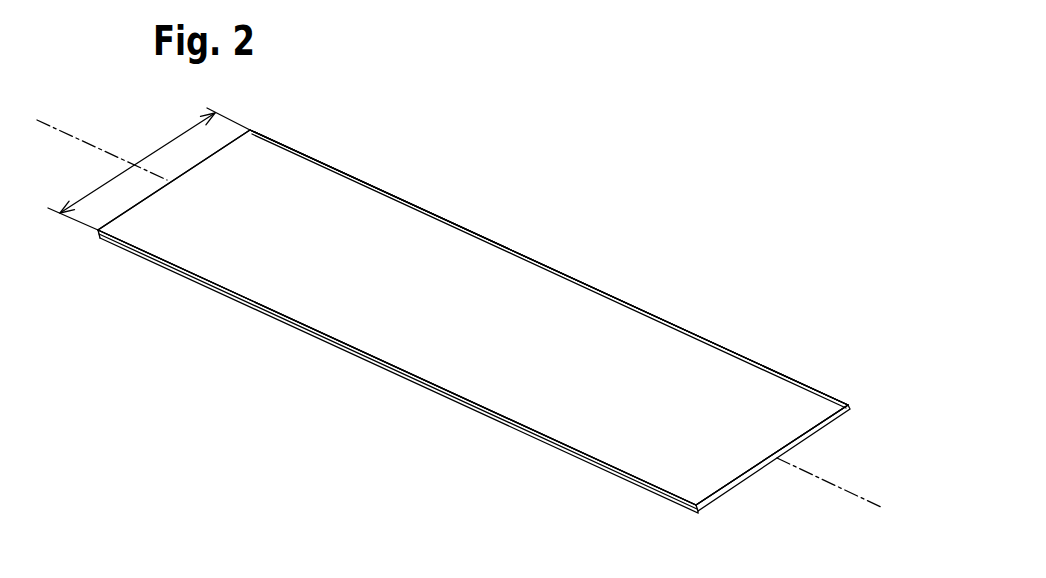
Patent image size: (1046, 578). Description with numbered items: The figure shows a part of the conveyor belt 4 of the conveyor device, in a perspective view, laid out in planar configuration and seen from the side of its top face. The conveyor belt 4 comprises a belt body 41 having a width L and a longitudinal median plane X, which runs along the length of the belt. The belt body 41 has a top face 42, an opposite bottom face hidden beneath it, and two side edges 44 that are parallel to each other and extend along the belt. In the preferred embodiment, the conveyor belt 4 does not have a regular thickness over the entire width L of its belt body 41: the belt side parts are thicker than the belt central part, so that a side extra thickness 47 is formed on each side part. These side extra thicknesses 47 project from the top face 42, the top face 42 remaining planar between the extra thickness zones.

The conveyor belt 4 is at (517, 229).
The belt body 41 is at (572, 310).
The top face 42 is at (453, 293).
The side edges 44 is at (690, 317).
The side extra thickness 47 is at (835, 381).
The width L is at (145, 160).
The longitudinal median plane X is at (852, 492).